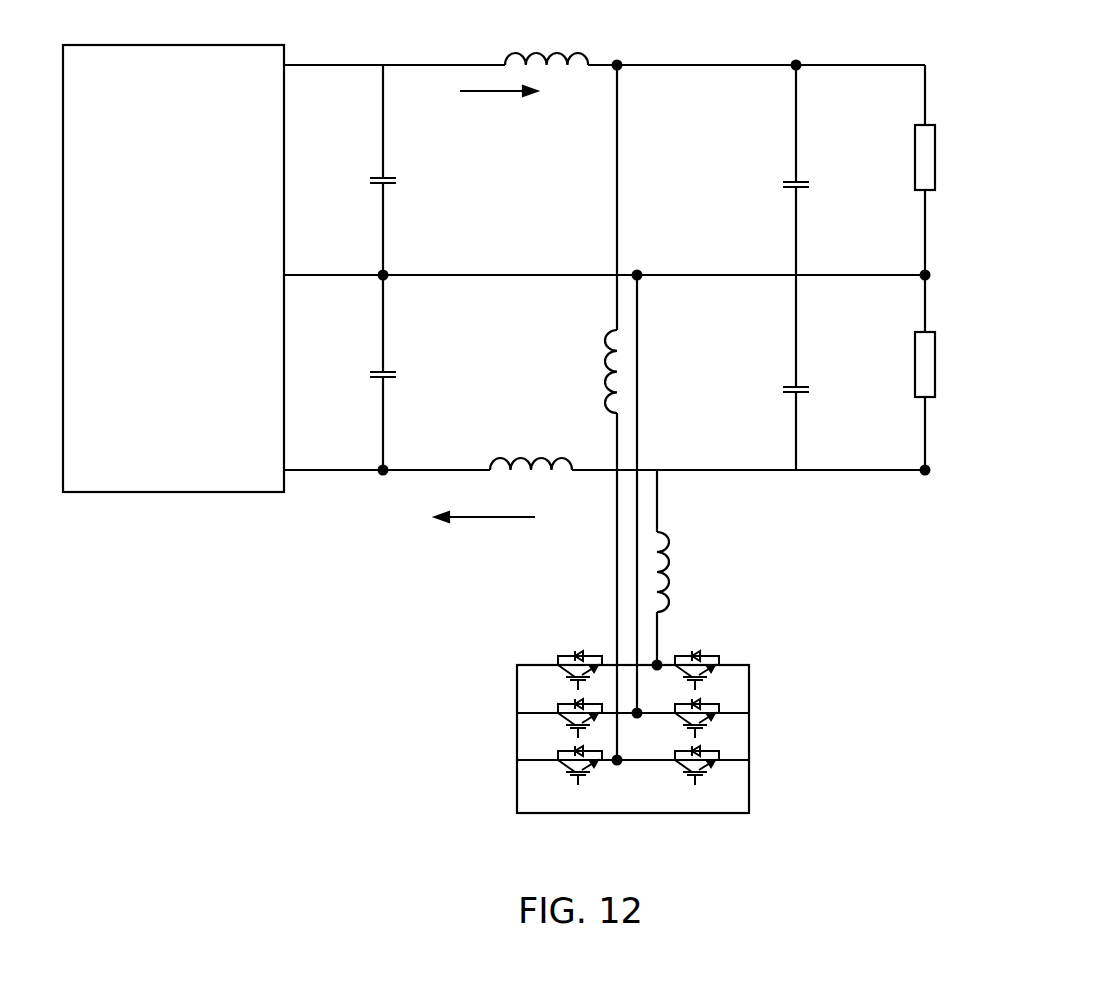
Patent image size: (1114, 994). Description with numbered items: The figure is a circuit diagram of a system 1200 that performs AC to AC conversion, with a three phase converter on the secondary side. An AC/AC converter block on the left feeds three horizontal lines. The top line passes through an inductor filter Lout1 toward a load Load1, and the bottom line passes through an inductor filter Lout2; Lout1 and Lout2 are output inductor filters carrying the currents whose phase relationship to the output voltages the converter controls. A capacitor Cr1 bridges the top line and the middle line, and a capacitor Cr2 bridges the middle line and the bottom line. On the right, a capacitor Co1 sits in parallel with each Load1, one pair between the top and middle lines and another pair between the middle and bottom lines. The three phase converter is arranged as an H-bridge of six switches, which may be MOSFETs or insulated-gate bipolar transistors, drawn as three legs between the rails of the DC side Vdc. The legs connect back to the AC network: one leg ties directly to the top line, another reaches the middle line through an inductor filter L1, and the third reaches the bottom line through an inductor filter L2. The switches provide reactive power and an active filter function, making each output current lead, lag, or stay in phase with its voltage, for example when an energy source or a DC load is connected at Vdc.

The system 1200 is at (588, 437).
The inductor filter Lout1 is at (546, 44).
The inductor filter Lout2 is at (531, 450).
The capacitor Cr1 is at (362, 170).
The capacitor Cr2 is at (362, 372).
The capacitor Co1 is at (773, 267).
The load Load1 is at (886, 267).
The inductor filter L1 is at (596, 412).
The inductor filter L2 is at (679, 567).
The DC side Vdc is at (633, 751).